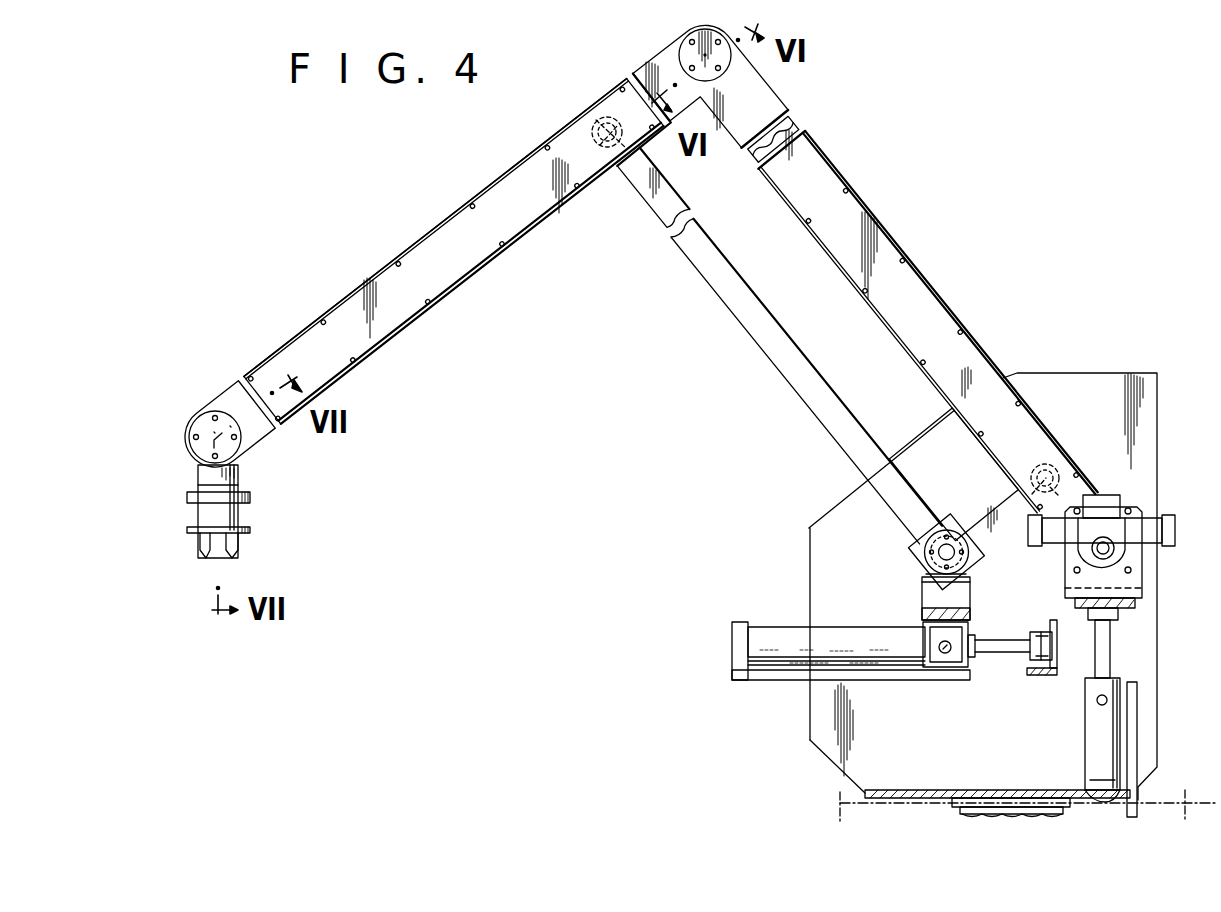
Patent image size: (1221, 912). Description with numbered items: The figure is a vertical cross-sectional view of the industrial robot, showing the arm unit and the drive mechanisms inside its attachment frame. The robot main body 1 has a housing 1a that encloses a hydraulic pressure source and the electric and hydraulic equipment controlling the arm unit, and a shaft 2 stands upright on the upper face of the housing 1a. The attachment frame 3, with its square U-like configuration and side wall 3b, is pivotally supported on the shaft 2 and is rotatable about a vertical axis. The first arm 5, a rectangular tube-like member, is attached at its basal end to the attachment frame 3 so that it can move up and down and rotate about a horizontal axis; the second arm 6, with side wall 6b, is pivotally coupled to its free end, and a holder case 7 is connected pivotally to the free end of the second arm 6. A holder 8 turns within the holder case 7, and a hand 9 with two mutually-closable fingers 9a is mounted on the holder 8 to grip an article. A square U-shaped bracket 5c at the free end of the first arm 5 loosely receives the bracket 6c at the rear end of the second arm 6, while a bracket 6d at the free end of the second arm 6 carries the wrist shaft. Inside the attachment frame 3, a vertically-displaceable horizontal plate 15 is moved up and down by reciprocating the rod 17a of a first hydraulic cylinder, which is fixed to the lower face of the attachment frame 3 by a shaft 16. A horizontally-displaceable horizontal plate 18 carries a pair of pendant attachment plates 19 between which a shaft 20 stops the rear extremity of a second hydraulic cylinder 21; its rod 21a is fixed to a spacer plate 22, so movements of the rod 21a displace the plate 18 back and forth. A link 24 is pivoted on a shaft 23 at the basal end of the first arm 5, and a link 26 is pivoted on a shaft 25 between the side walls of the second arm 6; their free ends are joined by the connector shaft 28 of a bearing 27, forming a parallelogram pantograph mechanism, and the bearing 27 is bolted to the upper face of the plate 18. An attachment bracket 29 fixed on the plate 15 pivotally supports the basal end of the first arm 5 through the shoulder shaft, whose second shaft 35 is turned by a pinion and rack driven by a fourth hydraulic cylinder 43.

The robot main body 1 is at (840, 812).
The housing 1a is at (1027, 795).
The shaft 2 is at (953, 811).
The attachment frame 3 is at (808, 550).
The side wall 3b is at (809, 721).
The first arm 5 is at (912, 256).
The square U-shaped bracket 5c is at (780, 92).
The second arm 6 is at (491, 191).
The side wall 6b is at (551, 221).
The bracket 6c is at (656, 68).
The square U-shaped bracket 6d is at (232, 402).
The holder case 7 is at (234, 468).
The holder 8 is at (250, 499).
The hand 9 is at (248, 527).
The fingers 9a is at (230, 557).
The vertically-displaceable horizontal plate 15 is at (1057, 647).
The shaft 16 is at (1098, 701).
The rod 17a is at (1102, 648).
The horizontally-displaceable horizontal plate 18 is at (922, 605).
The attachment plates 19 is at (960, 658).
The shaft 20 is at (943, 648).
The hydraulic cylinder 21 is at (782, 636).
The rod 21a is at (1000, 640).
The spacer plate 22 is at (1045, 632).
The shaft 23 is at (1058, 470).
The link 24 is at (991, 508).
The shaft 25 is at (594, 119).
The link 26 is at (791, 378).
The bearing 27 is at (922, 575).
The connector shaft 28 is at (942, 552).
The attachment bracket 29 is at (1144, 574).
The second shaft 35 is at (1092, 548).
The hydraulic cylinder 43 is at (1149, 517).